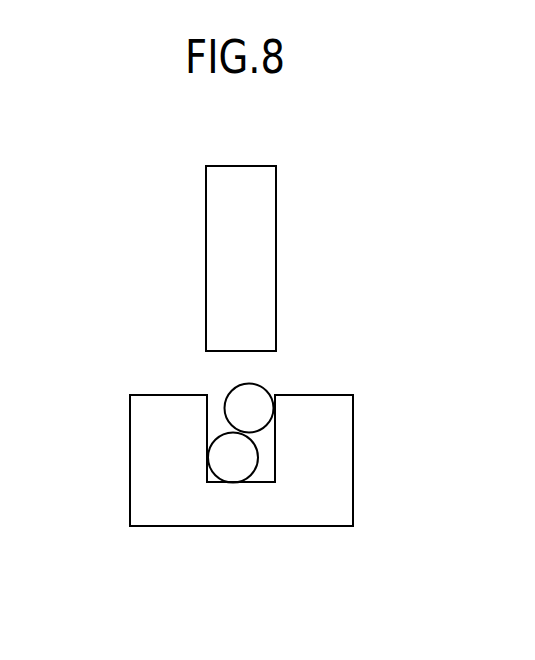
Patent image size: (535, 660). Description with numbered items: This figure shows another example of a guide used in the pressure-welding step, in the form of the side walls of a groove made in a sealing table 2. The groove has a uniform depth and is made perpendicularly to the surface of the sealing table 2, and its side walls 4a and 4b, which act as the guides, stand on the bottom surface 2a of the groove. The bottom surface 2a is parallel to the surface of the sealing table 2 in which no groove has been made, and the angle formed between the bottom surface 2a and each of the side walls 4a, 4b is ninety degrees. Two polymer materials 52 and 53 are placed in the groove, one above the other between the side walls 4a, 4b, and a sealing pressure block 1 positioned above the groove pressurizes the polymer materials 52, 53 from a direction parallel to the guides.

The sealing pressure block 1 is at (259, 200).
The sealing table 2 is at (337, 507).
The bottom surface 2a is at (258, 483).
The side wall 4a is at (207, 432).
The side wall 4b is at (275, 432).
The polymer material 52 is at (233, 465).
The polymer material 53 is at (242, 398).